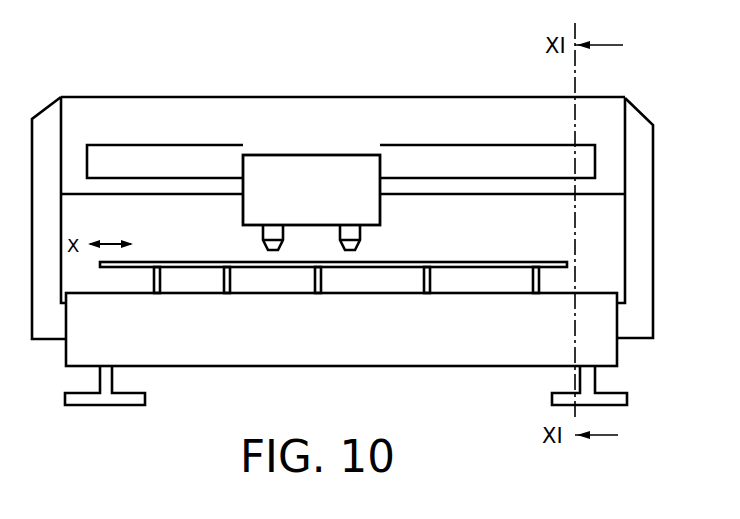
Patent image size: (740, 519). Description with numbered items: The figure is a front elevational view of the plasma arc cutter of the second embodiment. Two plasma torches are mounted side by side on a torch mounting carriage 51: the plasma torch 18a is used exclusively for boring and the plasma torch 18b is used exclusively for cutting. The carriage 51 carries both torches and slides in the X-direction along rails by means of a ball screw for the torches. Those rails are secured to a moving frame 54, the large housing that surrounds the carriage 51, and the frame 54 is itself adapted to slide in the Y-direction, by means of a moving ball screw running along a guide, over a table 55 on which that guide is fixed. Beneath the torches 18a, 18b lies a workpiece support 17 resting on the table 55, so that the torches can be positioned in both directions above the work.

The work table 17 is at (480, 262).
The plasma torch 18a is at (262, 241).
The plasma torch 18b is at (362, 246).
The torch mounting carriage 51 is at (304, 173).
The moving frame 54 is at (638, 192).
The table 55 is at (416, 358).